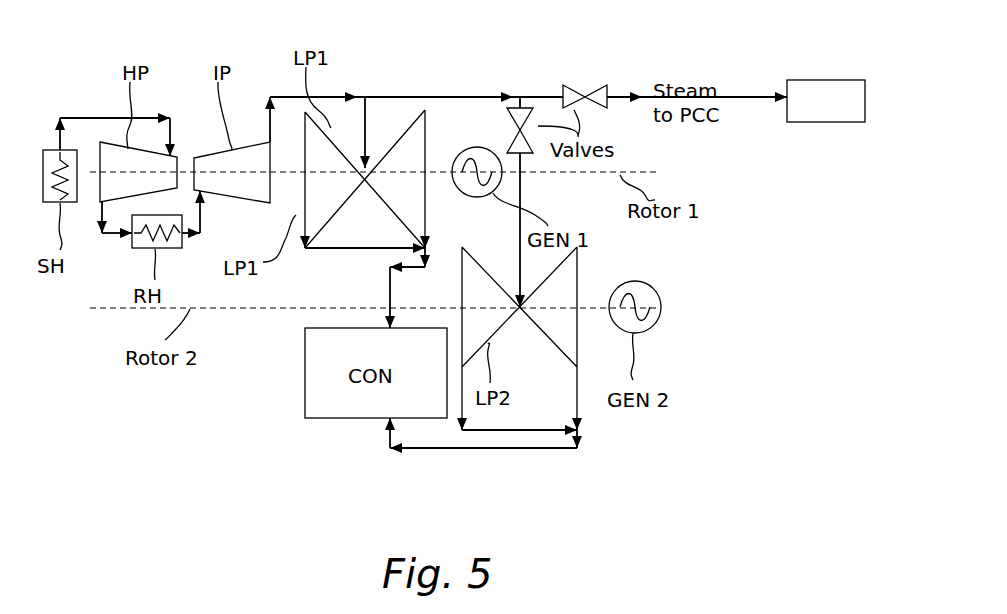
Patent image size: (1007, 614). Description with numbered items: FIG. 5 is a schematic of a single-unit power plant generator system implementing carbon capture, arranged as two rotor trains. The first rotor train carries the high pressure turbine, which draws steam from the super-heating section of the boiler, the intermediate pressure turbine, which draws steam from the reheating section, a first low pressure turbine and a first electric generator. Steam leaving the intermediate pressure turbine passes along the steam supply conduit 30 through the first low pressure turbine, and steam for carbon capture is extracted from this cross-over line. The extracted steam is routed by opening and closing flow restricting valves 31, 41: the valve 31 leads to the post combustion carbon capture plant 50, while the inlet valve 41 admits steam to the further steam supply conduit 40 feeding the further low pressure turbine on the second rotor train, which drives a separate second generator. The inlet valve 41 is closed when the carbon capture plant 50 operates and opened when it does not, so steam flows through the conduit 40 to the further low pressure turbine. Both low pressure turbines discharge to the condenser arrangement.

The steam supply conduit 30 is at (433, 97).
The valve 31 is at (592, 82).
The further steam supply conduit 40 is at (520, 193).
The inlet valve 41 is at (527, 108).
The post combustion carbon capture plant 50 is at (821, 65).